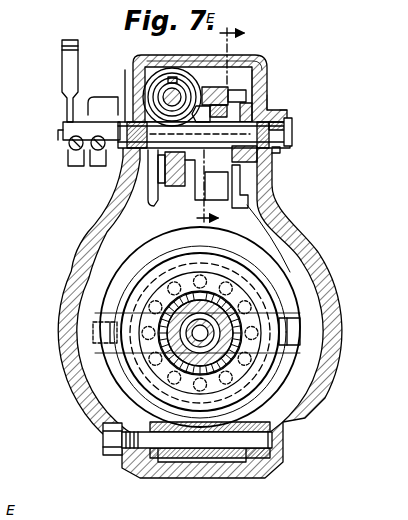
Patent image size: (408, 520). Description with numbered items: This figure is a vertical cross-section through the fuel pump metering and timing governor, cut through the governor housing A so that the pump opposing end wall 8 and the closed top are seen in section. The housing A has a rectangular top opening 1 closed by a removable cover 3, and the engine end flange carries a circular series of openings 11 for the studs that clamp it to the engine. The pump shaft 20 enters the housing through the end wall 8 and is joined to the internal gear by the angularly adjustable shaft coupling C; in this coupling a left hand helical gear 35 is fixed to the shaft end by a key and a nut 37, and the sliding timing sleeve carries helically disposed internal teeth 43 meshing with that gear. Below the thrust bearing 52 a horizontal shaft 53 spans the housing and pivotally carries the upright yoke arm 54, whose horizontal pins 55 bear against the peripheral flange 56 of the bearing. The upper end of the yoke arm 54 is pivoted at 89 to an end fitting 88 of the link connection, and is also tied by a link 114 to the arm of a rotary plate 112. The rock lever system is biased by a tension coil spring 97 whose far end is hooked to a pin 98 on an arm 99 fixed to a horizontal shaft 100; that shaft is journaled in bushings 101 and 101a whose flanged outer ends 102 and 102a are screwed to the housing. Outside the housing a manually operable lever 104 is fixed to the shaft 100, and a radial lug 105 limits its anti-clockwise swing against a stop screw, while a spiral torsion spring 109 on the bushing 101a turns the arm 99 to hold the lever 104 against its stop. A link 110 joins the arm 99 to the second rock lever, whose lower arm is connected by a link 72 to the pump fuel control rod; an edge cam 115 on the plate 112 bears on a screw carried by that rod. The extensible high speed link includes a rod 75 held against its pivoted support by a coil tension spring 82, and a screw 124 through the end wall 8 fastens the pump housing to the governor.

The top opening 1 is at (276, 92).
The removable cover 3 is at (258, 63).
The end wall 8 is at (85, 329).
The circular openings 11 is at (233, 131).
The pump shaft 20 is at (186, 324).
The left hand helical gear 35 is at (125, 389).
The nut 37 is at (302, 332).
The internal teeth 43 is at (268, 354).
The thrust bearing 52 is at (262, 318).
The horizontal shaft 53 is at (212, 452).
The yoke arm 54 is at (150, 235).
The horizontal pins 55 is at (128, 346).
The peripheral flange 56 is at (140, 275).
The link 72 is at (277, 202).
The rod 75 is at (172, 88).
The coil tension spring 82 is at (196, 126).
The end fitting 88 is at (172, 190).
The pivot 89 is at (158, 187).
The tension coil spring 97 is at (263, 75).
The pin 98 is at (268, 100).
The arm 99 is at (215, 87).
The horizontal shaft 100 is at (63, 133).
The bushing 101 is at (115, 162).
The bushing 101a is at (290, 142).
The flanged outer end 102 is at (115, 87).
The flanged outer end 102a is at (284, 114).
The manually operable lever 104 is at (62, 73).
The lug 105 is at (88, 108).
The spiral torsion spring 109 is at (272, 176).
The link 110 is at (232, 60).
The plate 112 is at (282, 154).
The link 114 is at (291, 229).
The edge cam 115 is at (292, 127).
The screw 124 is at (292, 108).
The housing A is at (326, 403).
The shaft coupling C is at (108, 419).